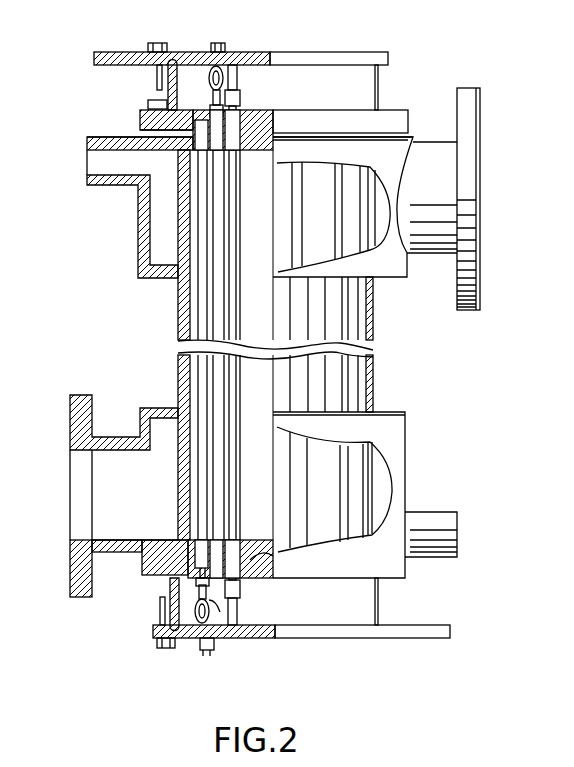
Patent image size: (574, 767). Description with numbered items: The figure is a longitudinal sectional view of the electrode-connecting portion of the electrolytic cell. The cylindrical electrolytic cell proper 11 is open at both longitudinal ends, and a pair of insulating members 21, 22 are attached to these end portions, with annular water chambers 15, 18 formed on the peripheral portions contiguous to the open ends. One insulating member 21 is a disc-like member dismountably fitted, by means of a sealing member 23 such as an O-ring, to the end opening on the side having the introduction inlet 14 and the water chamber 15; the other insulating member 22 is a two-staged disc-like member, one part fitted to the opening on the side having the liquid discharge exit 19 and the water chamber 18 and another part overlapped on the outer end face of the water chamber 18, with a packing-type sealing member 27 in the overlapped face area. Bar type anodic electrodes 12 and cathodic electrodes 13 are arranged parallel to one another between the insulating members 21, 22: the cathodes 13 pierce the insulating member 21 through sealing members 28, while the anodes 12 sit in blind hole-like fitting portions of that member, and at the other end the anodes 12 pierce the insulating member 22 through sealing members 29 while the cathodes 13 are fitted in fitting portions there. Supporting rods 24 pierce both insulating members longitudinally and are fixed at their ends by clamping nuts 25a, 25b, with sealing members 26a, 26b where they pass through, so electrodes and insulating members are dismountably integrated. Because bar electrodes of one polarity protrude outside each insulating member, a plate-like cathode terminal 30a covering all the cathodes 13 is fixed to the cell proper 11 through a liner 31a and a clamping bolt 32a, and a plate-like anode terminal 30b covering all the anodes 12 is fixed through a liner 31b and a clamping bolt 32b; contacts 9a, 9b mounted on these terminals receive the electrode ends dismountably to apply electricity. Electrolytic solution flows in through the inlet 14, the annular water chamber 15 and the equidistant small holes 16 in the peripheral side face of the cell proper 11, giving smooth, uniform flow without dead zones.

The contact 9a is at (200, 614).
The contact 9b is at (213, 66).
The electrolytic cell proper 11 is at (178, 376).
The anodic electrodes 12 is at (216, 314).
The cathodic electrodes 13 is at (200, 290).
The introduction inlet 14 is at (70, 476).
The water chamber 15 is at (146, 430).
The small holes 16 is at (322, 216).
The water chamber 18 is at (146, 239).
The liquid discharge exit 19 is at (219, 43).
The insulating member 21 is at (275, 560).
The insulating member 22 is at (140, 115).
The sealing member 23 is at (152, 565).
The supporting rods 24 is at (200, 343).
The clamping nut 25a is at (240, 600).
The clamping nut 25b is at (238, 88).
The sealing member 26a is at (272, 586).
The sealing member 26b is at (243, 130).
The sealing member 27 is at (142, 130).
The sealing members 28 is at (220, 618).
The sealing members 29 is at (214, 108).
The cathode terminal 30a is at (401, 639).
The anode terminal 30b is at (328, 57).
The liner 31a is at (170, 590).
The liner 31b is at (159, 77).
The clamping bolt 32a is at (158, 647).
The clamping bolt 32b is at (153, 43).